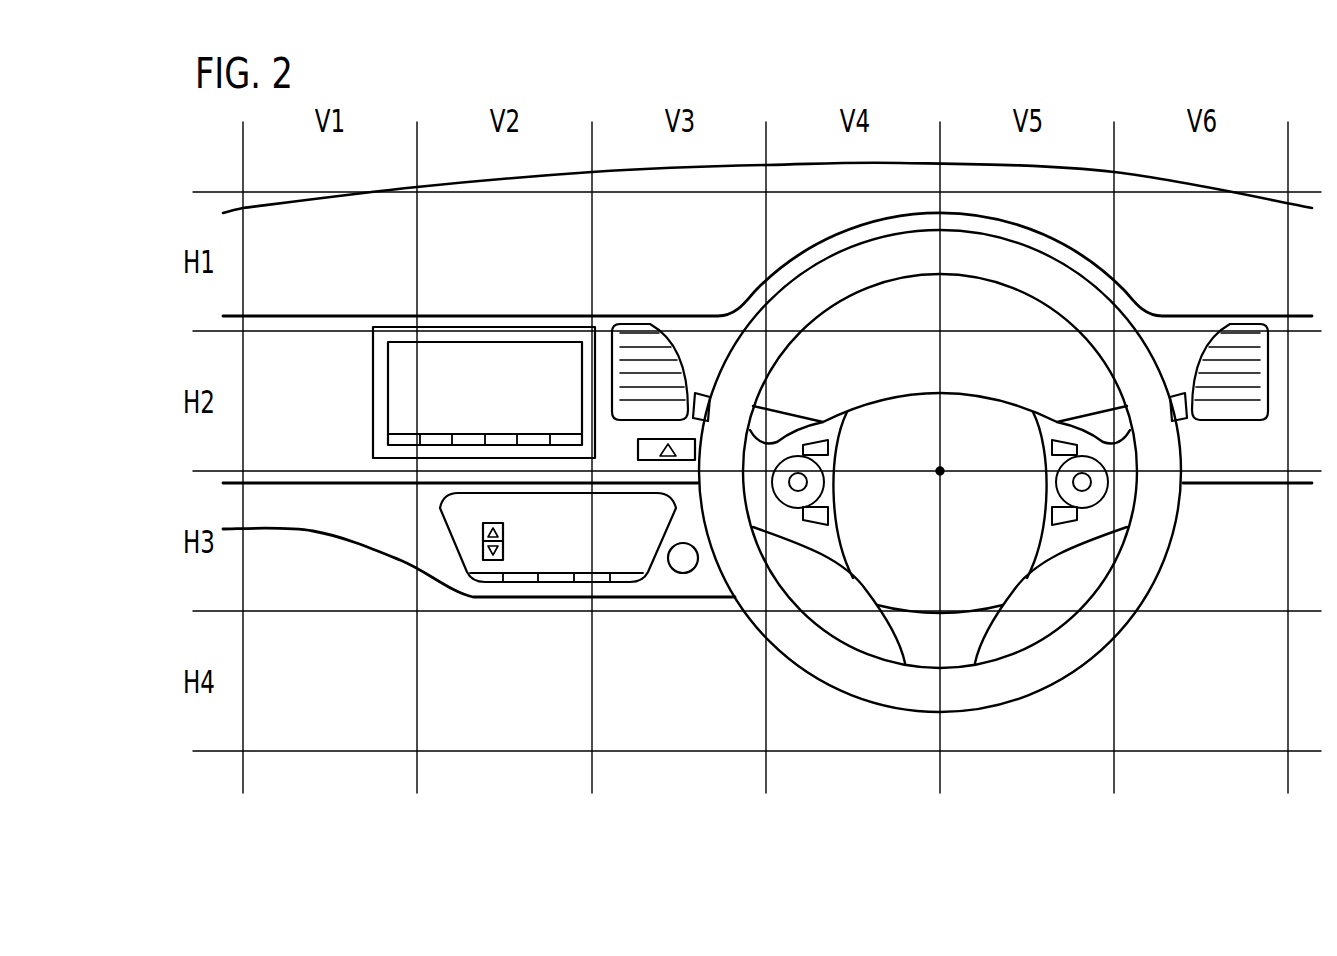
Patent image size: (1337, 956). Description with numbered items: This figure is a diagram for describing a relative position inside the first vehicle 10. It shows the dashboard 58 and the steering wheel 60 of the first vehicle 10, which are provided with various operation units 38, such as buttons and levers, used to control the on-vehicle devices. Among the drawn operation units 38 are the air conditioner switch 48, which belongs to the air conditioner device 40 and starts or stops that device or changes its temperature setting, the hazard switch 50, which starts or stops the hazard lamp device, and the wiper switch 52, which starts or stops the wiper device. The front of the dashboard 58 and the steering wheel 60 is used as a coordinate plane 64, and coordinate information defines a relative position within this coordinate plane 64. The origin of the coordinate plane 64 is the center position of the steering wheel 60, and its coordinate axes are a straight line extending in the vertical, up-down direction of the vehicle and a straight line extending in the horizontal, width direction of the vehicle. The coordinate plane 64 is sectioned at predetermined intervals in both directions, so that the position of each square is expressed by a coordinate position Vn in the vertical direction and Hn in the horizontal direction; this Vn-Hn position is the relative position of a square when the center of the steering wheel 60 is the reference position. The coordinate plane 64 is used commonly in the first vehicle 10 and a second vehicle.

The first vehicle 10 is at (601, 93).
The operation unit 38 is at (595, 461).
The air conditioner device 40 is at (444, 569).
The air conditioner switch 48 is at (517, 573).
The hazard switch 50 is at (647, 453).
The wiper switch 52 is at (693, 396).
The dashboard 58 is at (483, 181).
The steering wheel 60 is at (813, 677).
The coordinate plane 64 is at (205, 753).